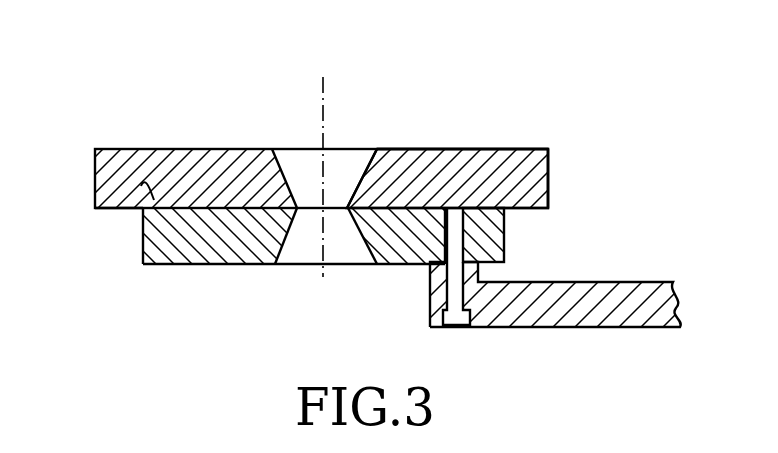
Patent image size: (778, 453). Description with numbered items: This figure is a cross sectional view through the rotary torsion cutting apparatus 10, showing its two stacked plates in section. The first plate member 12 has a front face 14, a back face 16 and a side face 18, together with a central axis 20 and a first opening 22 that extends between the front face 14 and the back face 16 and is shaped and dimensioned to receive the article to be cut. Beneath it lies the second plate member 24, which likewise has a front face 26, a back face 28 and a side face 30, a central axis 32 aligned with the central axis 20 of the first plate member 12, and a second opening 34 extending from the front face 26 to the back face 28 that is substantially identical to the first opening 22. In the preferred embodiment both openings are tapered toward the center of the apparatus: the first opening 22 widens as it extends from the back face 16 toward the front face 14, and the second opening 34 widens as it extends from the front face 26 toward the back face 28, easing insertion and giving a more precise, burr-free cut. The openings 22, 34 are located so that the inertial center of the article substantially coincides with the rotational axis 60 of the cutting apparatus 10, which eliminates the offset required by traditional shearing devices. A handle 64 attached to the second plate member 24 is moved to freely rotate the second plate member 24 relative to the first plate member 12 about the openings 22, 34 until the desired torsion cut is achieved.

The cutting apparatus 10 is at (130, 108).
The first plate member 12 is at (468, 148).
The front face 14 is at (203, 149).
The back face 16 is at (112, 210).
The side face 18 is at (551, 175).
The central axis 20 is at (325, 148).
The first opening 22 is at (298, 148).
The second plate member 24 is at (193, 266).
The front face 26 is at (141, 186).
The back face 28 is at (240, 266).
The side face 30 is at (505, 233).
The central axis 32 is at (322, 265).
The second opening 34 is at (348, 257).
The rotational axis 60 is at (324, 78).
The handle 64 is at (645, 280).